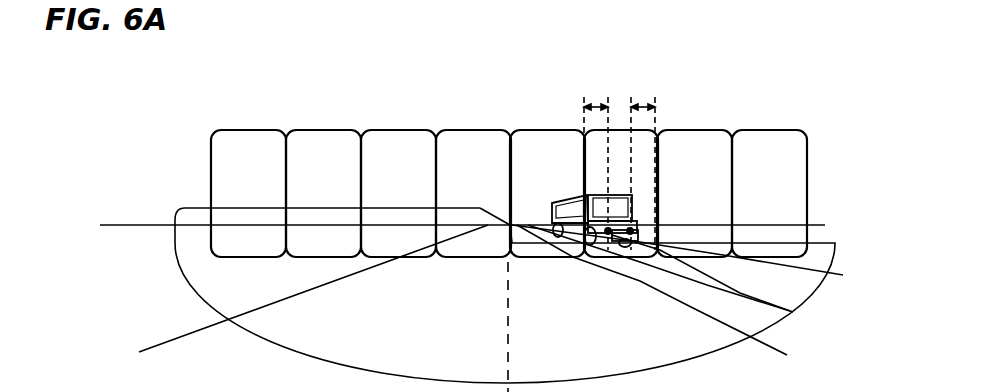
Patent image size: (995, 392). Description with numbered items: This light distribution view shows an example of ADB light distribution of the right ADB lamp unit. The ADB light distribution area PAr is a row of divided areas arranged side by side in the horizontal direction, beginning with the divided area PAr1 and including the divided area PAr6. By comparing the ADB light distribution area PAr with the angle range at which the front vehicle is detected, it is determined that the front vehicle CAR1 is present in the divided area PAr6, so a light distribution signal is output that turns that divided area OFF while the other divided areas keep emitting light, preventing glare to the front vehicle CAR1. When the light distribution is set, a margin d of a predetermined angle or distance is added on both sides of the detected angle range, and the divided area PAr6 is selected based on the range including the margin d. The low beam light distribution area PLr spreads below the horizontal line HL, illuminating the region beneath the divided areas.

The divided area PAr1 is at (262, 129).
The ADB light distribution area PAr is at (509, 166).
The divided area PAr6 is at (657, 130).
The front vehicle CAR1 is at (554, 205).
The margin d is at (619, 158).
The horizontal line HL is at (793, 312).
The road surface plane region PLr is at (673, 365).